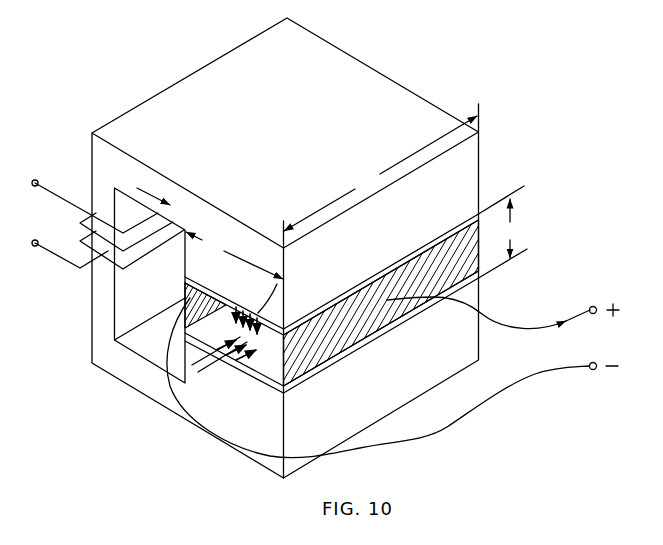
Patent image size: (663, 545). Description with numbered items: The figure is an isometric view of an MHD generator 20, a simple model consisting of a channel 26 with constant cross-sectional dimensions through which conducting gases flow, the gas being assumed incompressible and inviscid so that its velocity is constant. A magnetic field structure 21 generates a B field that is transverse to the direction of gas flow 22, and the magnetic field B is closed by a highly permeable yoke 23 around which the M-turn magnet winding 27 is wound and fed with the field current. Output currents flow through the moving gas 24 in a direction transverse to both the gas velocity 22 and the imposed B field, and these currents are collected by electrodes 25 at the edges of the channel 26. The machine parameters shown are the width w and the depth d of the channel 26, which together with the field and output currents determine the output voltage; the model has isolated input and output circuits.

The MHD generator 20 is at (152, 68).
The magnetic field structure 21 is at (90, 152).
The direction of gas flow 22 is at (228, 367).
The highly permeable yoke 23 is at (294, 142).
The moving gas 24 is at (332, 344).
The electrodes 25 is at (186, 300).
The channel 26 is at (242, 336).
The magnet winding 27 is at (106, 226).